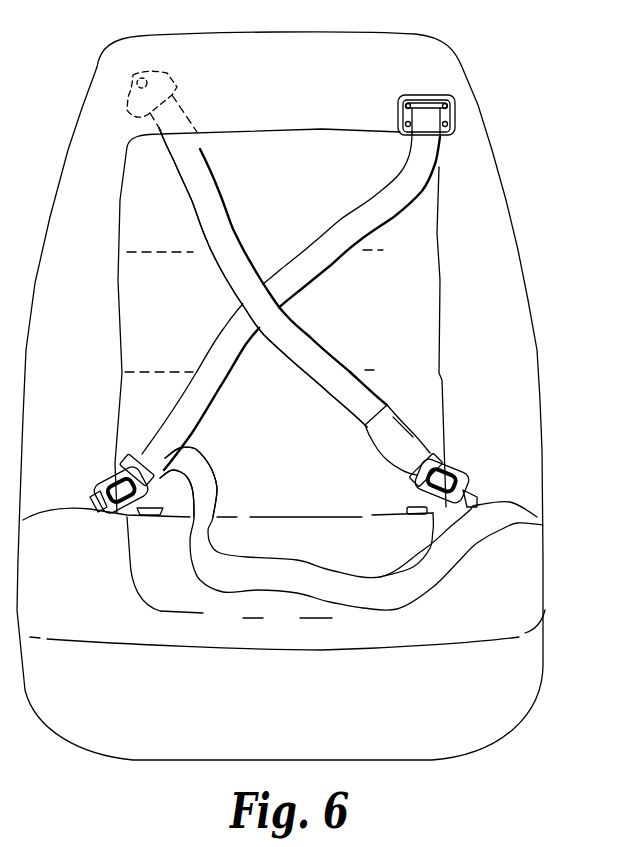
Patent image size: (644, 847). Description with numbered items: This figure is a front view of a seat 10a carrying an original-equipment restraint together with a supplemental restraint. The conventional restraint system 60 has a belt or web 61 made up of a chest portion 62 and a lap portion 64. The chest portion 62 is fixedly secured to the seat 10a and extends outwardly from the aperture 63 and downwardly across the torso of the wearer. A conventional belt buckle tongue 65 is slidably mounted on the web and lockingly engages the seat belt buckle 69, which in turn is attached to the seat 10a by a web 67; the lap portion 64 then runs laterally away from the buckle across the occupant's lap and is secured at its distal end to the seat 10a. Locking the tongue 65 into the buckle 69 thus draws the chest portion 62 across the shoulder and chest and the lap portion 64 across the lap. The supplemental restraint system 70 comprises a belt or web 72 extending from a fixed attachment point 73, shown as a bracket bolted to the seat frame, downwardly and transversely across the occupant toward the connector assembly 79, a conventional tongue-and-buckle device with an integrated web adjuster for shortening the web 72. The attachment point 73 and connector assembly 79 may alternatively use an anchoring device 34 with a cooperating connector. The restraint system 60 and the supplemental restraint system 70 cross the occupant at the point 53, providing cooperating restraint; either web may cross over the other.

The seat 10a is at (543, 90).
The anchoring device 34 is at (213, 487).
The crossing point 53 is at (301, 312).
The conventional restraint system 60 is at (145, 571).
The belt or web 61 is at (437, 167).
The chest portion 62 is at (286, 287).
The aperture 63 is at (445, 96).
The lap portion 64 is at (270, 590).
The belt buckle tongue 65 is at (137, 466).
The web 67 is at (92, 500).
The seat belt buckle 69 is at (114, 474).
The supplemental restraint system 70 is at (176, 192).
The belt or web 72 is at (221, 275).
The fixed attachment point 73 is at (137, 81).
The connector assembly 79 is at (456, 460).